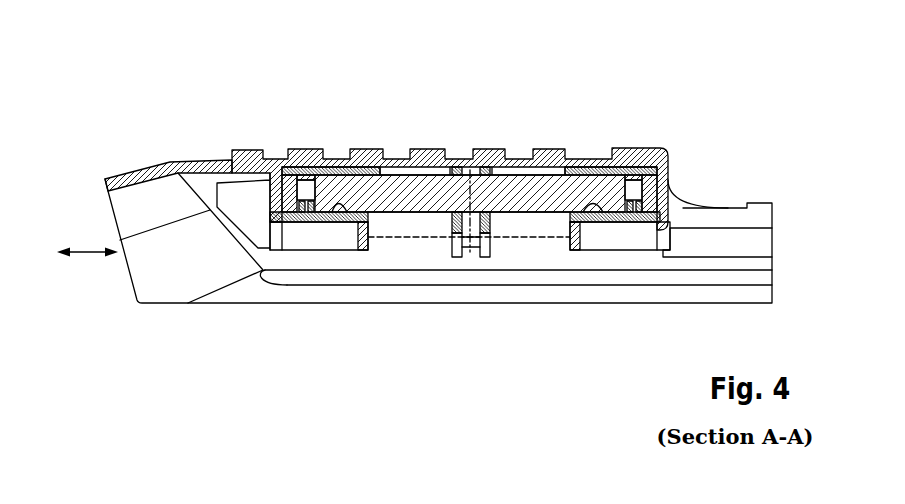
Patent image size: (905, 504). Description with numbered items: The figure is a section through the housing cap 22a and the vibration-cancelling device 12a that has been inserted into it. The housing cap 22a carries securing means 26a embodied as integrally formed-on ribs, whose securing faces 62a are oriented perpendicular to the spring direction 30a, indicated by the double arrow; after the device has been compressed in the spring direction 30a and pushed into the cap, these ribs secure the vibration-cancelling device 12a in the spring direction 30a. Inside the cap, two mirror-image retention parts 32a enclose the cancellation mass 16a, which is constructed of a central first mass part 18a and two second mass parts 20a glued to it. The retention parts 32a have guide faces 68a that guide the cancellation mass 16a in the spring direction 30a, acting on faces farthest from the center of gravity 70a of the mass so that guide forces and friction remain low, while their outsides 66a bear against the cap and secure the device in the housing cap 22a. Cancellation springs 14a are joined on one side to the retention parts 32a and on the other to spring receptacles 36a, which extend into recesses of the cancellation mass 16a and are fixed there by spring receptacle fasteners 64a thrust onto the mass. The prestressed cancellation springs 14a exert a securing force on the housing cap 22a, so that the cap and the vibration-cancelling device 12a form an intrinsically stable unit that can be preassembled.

The vibration-cancelling device 12a is at (186, 94).
The housing cap 22a is at (152, 172).
The securing means 26a is at (248, 157).
The securing faces 62a is at (283, 172).
The retention parts 32a is at (358, 205).
The cancellation mass 16a is at (398, 165).
The first mass part 18a is at (434, 192).
The spring receptacle fasteners 64a is at (489, 168).
The outsides 66a is at (270, 215).
The guide faces 68a is at (367, 222).
The cancellation springs 14a is at (295, 222).
The second mass parts 20a is at (412, 230).
The spring receptacles 36a is at (463, 232).
The center of gravity 70a is at (470, 200).
The spring direction 30a is at (86, 256).